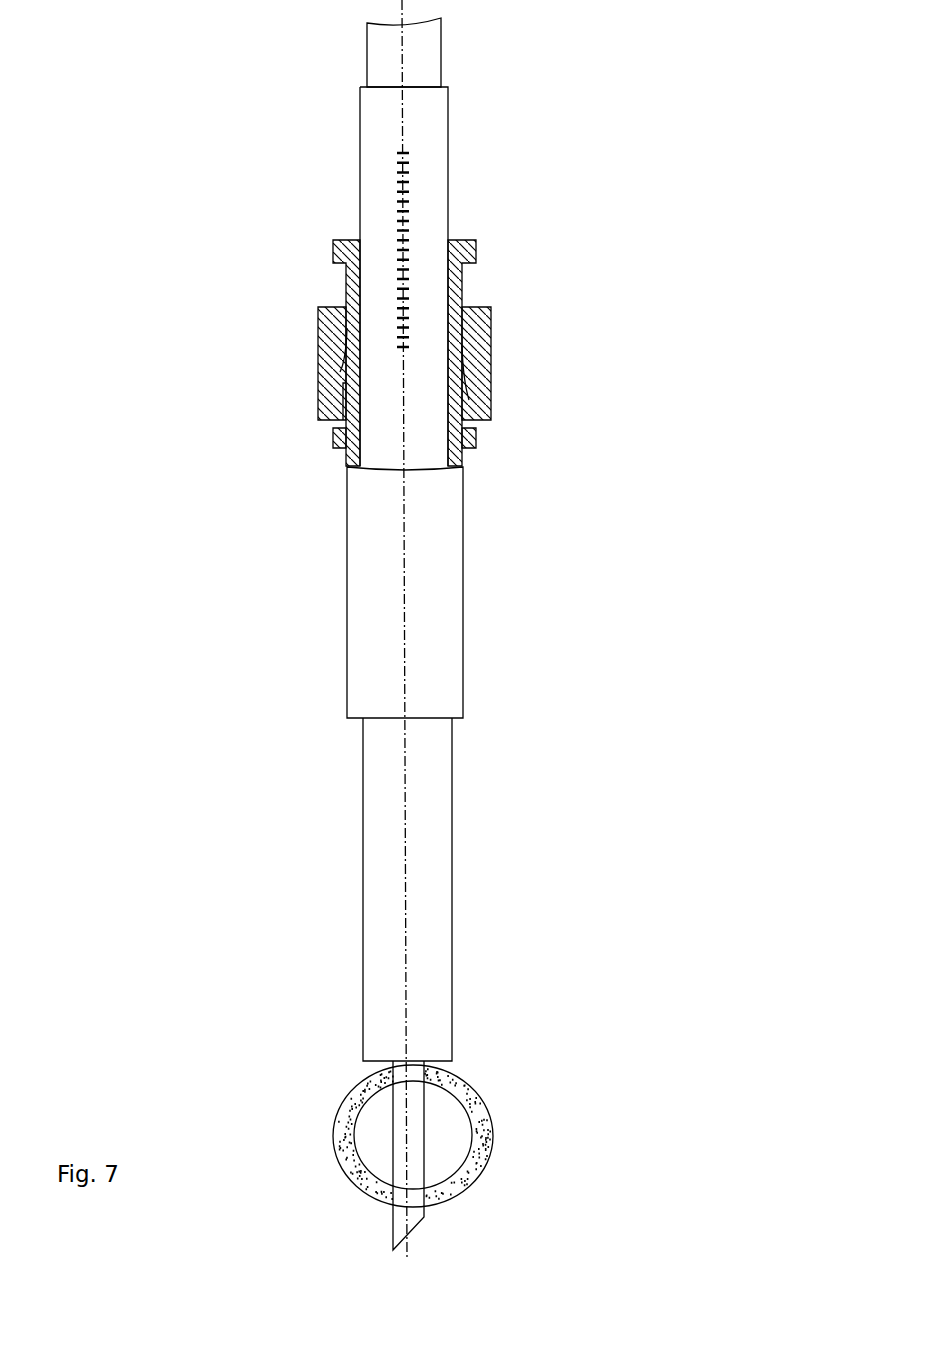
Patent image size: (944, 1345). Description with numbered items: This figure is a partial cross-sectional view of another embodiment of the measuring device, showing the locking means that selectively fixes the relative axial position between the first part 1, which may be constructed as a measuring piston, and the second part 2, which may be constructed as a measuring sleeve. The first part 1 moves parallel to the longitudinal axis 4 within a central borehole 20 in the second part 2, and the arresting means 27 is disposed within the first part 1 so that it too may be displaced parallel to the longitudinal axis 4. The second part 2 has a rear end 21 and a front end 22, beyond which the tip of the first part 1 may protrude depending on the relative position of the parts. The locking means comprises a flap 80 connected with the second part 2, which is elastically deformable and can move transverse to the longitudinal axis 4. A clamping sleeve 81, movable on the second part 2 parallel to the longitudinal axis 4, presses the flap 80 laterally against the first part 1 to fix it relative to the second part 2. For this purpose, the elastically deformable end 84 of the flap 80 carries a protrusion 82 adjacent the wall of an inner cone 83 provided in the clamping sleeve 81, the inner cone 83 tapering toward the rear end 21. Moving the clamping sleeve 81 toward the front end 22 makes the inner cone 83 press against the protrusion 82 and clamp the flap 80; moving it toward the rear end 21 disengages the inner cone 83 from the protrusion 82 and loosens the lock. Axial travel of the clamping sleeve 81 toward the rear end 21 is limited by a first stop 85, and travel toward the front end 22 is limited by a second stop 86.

The arresting means 27 is at (470, 46).
The first part 1 is at (428, 290).
The second part 2 is at (452, 702).
The longitudinal axis 4 is at (405, 955).
The central borehole 20 is at (463, 448).
The rear end 21 is at (478, 243).
The front end 22 is at (442, 1040).
The flap 80 is at (338, 327).
The clamping sleeve 81 is at (483, 390).
The protrusion 82 is at (338, 362).
The inner cone 83 is at (470, 380).
The elastically deformable end 84 is at (338, 378).
The first stop 85 is at (337, 258).
The second stop 86 is at (331, 430).